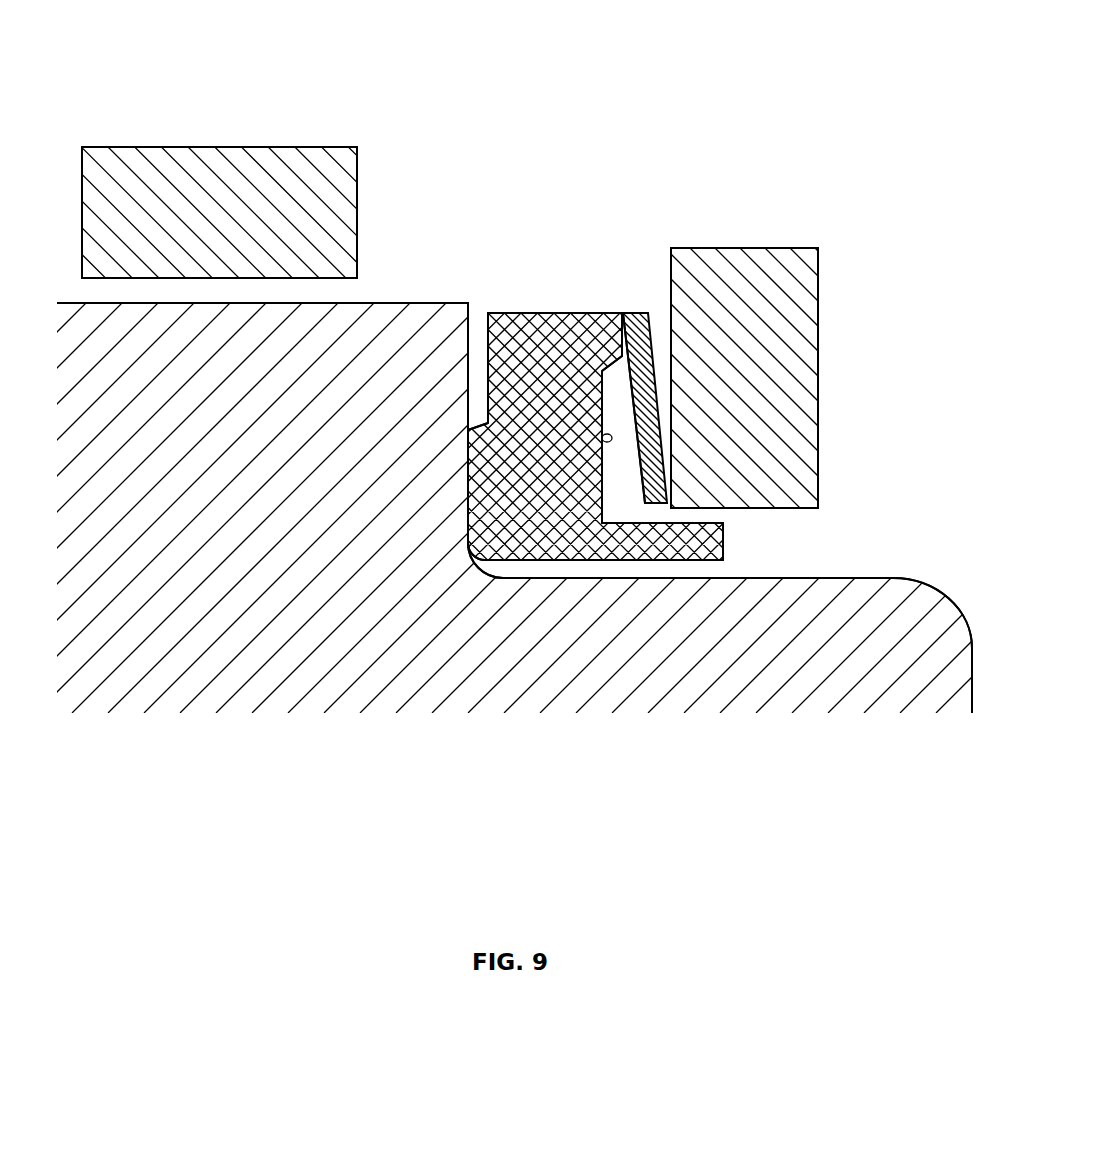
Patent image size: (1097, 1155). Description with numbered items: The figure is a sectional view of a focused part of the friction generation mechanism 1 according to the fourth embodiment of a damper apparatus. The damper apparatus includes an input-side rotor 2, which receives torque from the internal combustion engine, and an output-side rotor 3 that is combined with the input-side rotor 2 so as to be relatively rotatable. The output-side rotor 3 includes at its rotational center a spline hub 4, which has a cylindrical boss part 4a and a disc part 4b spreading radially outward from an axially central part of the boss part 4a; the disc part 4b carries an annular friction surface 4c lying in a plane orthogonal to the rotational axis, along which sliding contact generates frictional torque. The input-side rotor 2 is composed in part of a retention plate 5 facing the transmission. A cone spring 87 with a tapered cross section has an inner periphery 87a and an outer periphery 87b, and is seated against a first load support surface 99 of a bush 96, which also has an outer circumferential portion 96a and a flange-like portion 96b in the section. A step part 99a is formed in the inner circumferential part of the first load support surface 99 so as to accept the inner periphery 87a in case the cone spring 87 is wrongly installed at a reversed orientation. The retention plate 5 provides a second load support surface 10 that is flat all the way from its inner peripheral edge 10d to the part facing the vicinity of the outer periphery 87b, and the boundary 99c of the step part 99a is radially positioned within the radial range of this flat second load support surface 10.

The friction generation mechanism 1 is at (608, 140).
The input-side rotor 2 is at (833, 185).
The output-side rotor 3 is at (158, 732).
The spline hub 4 is at (293, 652).
The boss part 4a is at (847, 675).
The disc part 4b is at (353, 330).
The annular friction surface 4c is at (512, 575).
The retention plate 5 is at (792, 277).
The second load support surface 10 is at (670, 278).
The inner peripheral edge 10d is at (672, 505).
The cone spring 87 is at (650, 313).
The inner periphery 87a is at (653, 503).
The outer periphery 87b is at (637, 313).
The seal body 96 is at (538, 313).
The outer peripheral portion of seal body 96a is at (466, 495).
The flange portion of seal body 96b is at (707, 547).
The first load support surface 99 is at (630, 313).
The step part 99a is at (605, 437).
The boundary 99c is at (623, 362).